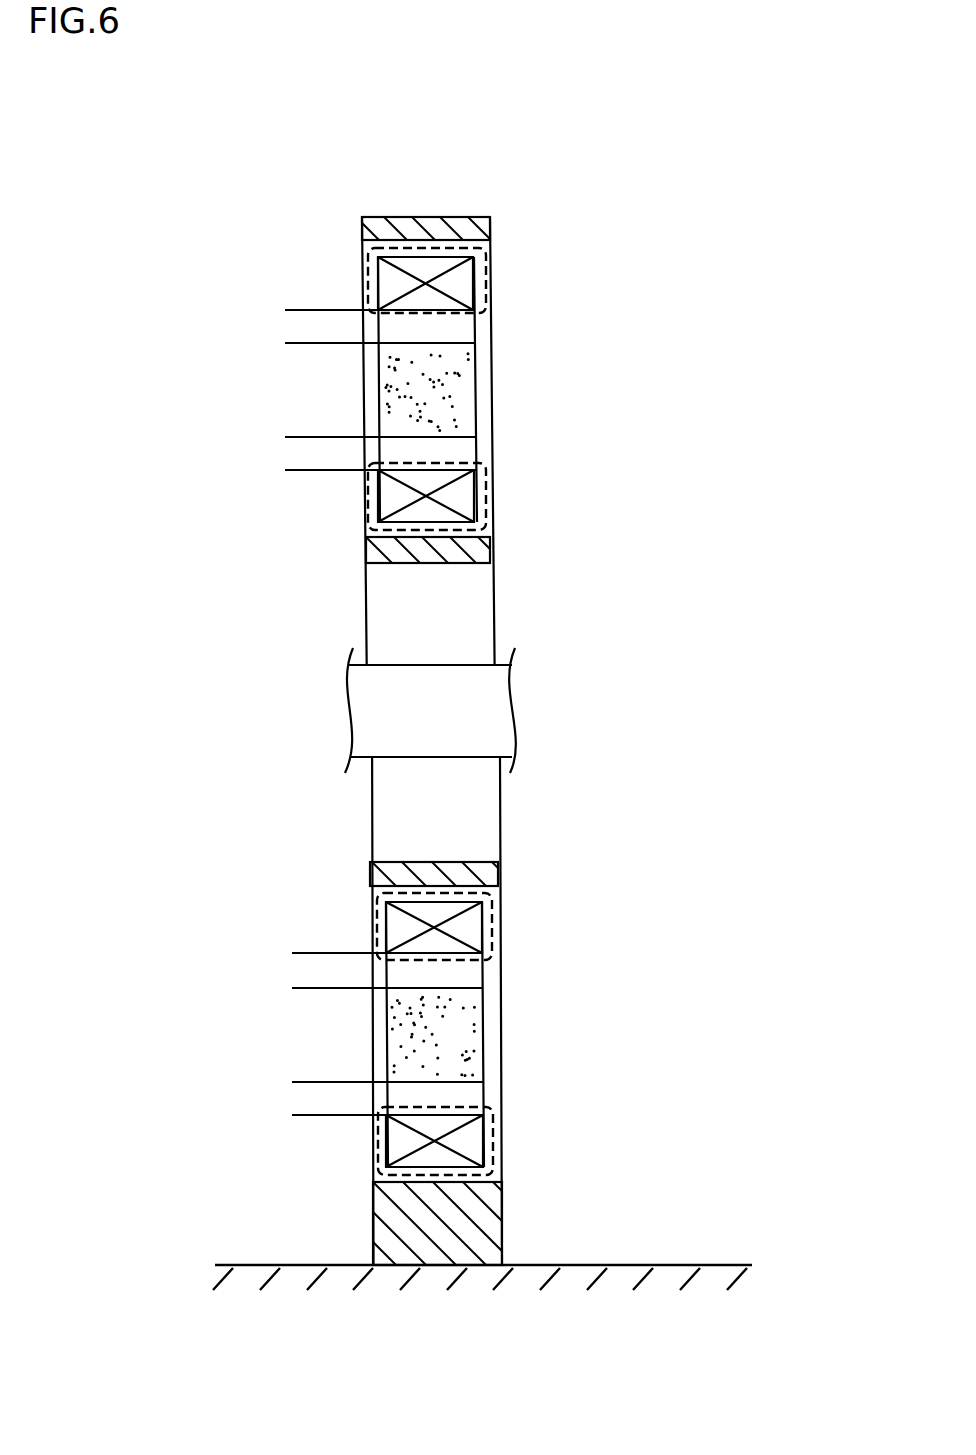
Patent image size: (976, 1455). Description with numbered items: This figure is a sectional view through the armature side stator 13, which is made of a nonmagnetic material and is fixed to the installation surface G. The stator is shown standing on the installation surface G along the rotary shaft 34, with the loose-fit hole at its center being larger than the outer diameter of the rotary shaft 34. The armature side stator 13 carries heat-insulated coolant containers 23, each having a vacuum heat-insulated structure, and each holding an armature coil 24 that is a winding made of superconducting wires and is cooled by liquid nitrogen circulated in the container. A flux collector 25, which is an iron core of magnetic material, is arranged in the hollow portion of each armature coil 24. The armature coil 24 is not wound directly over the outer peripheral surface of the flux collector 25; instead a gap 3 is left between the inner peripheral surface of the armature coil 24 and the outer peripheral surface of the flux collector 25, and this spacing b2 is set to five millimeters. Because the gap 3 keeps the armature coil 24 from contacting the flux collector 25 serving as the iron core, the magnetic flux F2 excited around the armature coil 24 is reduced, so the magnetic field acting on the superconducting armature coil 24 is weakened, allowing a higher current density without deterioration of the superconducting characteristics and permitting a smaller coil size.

The gap 3 is at (460, 327).
The armature side stator 13 is at (513, 1235).
The heat-insulated coolant container 23 is at (490, 302).
The armature coil 24 is at (423, 265).
The flux collector 25 is at (413, 362).
The rotary shaft 34 is at (468, 716).
The magnetic flux F2 is at (368, 270).
The installation surface G is at (668, 1264).
The spacing b2 is at (295, 288).